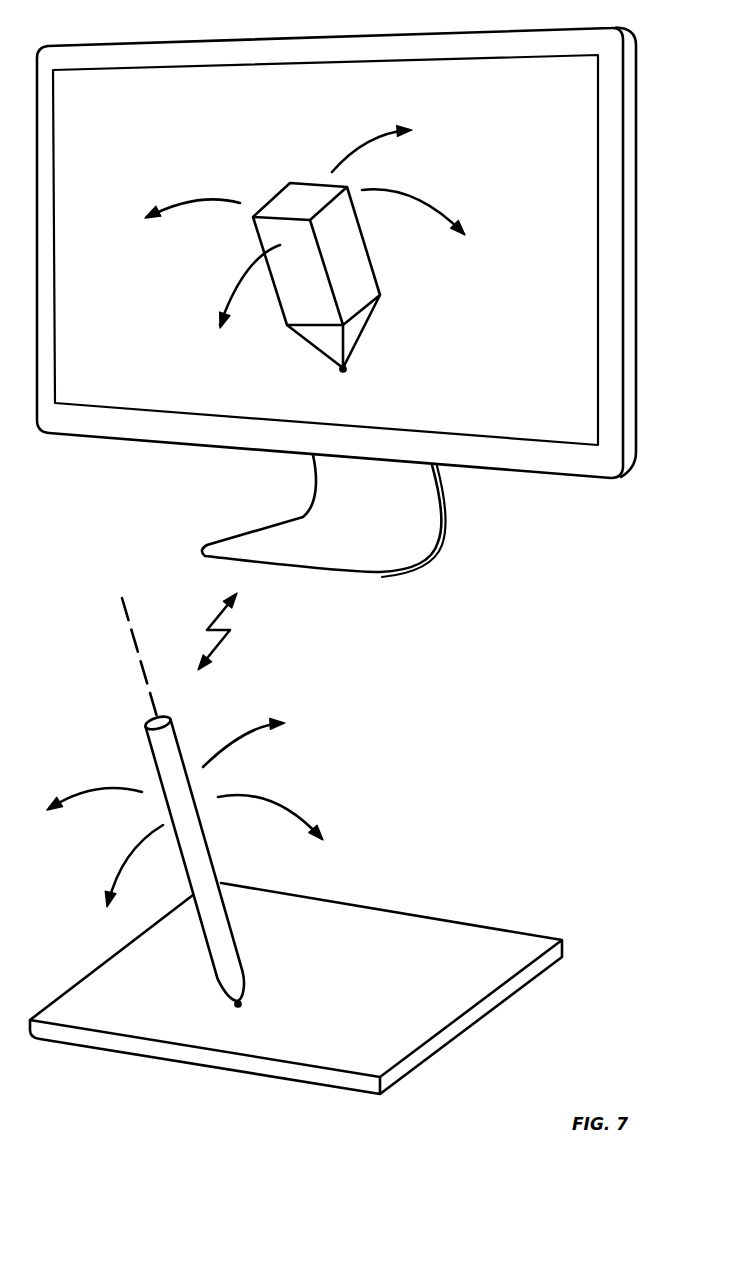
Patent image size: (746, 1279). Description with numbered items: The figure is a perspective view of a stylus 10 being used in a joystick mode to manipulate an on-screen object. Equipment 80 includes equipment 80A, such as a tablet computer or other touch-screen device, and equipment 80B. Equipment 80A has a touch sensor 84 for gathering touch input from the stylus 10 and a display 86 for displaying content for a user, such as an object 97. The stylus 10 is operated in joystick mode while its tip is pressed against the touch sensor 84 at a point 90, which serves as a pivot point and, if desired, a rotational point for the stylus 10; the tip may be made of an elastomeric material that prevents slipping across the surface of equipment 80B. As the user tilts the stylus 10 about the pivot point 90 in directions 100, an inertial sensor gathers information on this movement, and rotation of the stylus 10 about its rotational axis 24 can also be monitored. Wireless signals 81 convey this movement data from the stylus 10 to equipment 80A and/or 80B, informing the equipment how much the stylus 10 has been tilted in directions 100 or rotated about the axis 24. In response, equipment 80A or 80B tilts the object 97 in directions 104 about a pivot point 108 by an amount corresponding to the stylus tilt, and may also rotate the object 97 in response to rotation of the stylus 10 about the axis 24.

The stylus 10 is at (147, 743).
The rotational axis 24 is at (122, 611).
The equipment 80 is at (443, 880).
The equipment 80A is at (630, 438).
The equipment 80B is at (552, 935).
The wireless signals 81 is at (232, 635).
The touch sensor 84 is at (353, 943).
The display 86 is at (560, 337).
The point 90 is at (243, 1003).
The object 97 is at (370, 262).
The directions 100 is at (242, 732).
The directions 104 is at (186, 202).
The pivot point 108 is at (347, 368).